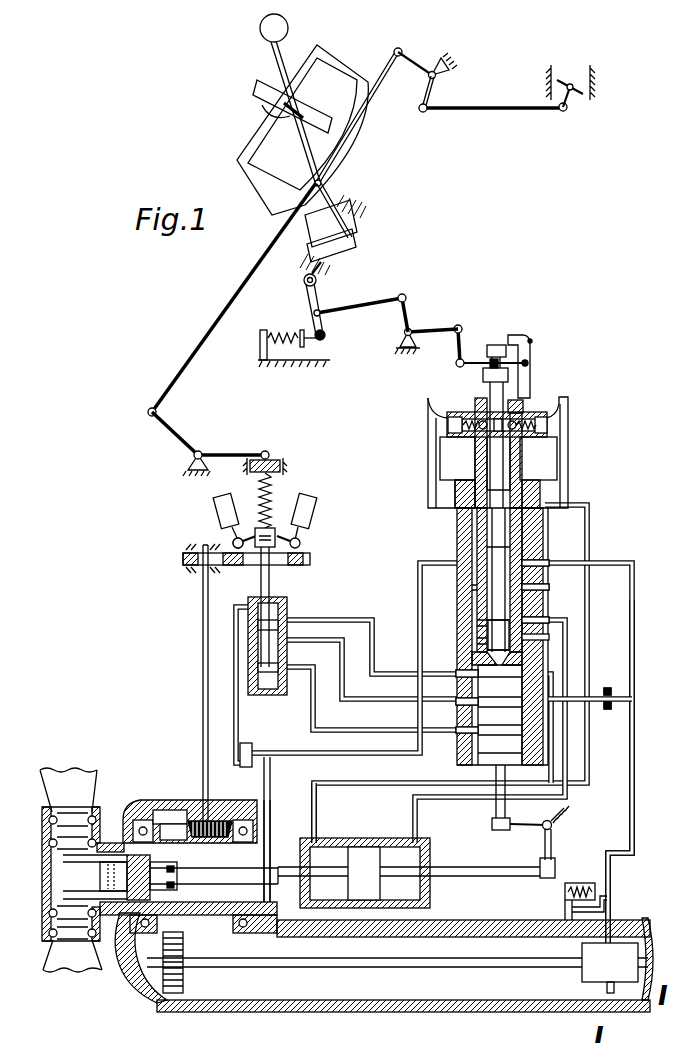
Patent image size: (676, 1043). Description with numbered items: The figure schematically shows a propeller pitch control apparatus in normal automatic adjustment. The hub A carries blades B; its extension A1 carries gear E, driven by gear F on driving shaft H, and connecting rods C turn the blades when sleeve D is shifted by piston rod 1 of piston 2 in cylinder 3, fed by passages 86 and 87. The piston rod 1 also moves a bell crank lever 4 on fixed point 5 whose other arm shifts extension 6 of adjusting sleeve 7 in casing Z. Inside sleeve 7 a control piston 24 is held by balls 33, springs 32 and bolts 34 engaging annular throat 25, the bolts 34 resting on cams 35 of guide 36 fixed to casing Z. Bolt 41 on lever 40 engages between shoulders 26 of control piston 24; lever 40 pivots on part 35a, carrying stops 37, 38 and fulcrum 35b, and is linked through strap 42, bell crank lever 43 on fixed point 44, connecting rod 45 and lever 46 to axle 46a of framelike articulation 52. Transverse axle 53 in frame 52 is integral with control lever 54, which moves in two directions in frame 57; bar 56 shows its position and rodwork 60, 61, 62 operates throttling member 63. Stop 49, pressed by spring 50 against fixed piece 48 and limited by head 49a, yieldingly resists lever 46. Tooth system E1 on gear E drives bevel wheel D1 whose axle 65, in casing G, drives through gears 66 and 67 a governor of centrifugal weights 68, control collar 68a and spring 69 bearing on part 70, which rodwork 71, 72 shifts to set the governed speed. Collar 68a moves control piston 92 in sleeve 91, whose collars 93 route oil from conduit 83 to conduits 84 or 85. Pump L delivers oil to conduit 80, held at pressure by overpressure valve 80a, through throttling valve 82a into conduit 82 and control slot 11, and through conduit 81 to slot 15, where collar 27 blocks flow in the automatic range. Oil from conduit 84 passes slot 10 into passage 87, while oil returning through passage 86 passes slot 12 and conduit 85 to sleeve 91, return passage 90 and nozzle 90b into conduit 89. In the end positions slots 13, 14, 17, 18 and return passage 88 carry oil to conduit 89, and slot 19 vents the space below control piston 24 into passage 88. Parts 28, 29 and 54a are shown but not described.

The piston rod 1 is at (244, 869).
The piston 2 is at (362, 846).
The cylinder 3 is at (378, 904).
The bell crank lever 4 is at (545, 849).
The fixed point 5 is at (552, 830).
The extension of adjusting sleeve 6 is at (494, 817).
The adjusting sleeve 7 is at (458, 530).
The slot 10 is at (463, 673).
The control slot 11 is at (463, 700).
The slot 12 is at (463, 731).
The slot 13 is at (527, 620).
The slot 14 is at (568, 506).
The slot 15 is at (527, 589).
The slot 17 is at (478, 507).
The slot 18 is at (478, 624).
The slot 19 is at (478, 652).
The control piston 24 is at (488, 393).
The annular throat 25 is at (483, 448).
The shoulders 26 is at (497, 345).
The collar 27 is at (531, 547).
The spool 28 is at (500, 634).
The chamber 29 is at (495, 487).
The springs 32 is at (549, 425).
The balls 33 is at (525, 413).
The bolts 34 is at (557, 432).
The cams 35 is at (446, 425).
The part 35a is at (533, 341).
The fulcrum 35b is at (528, 362).
The guide 36 is at (428, 453).
The stop 37 is at (530, 338).
The stop 38 is at (523, 400).
The lever 40 is at (467, 360).
The bolt 41 is at (500, 363).
The strap 42 is at (463, 325).
The bell crank lever 43 is at (437, 329).
The fixed point 44 is at (403, 334).
The connecting rod 45 is at (400, 296).
The lever 46 is at (324, 338).
The axle 46a is at (305, 273).
The fixed piece 48 is at (268, 362).
The stop 49 is at (300, 330).
The head 49a is at (259, 346).
The spring 50 is at (268, 336).
The framelike articulation 52 is at (345, 261).
The axle 53 is at (358, 233).
The control lever 54 is at (287, 50).
The pin 54a is at (262, 108).
The bar 56 is at (257, 84).
The frame 57 is at (245, 137).
The rodwork 60 is at (394, 53).
The rodwork 61 is at (421, 57).
The rodwork 62 is at (485, 106).
The throttling member 63 is at (569, 82).
The axle 65 is at (203, 731).
The gear 66 is at (184, 560).
The gear 67 is at (302, 553).
The centrifugal weights 68 is at (217, 507).
The control collar 68a is at (234, 540).
The spring 69 is at (273, 500).
The part 70 is at (284, 468).
The rodwork 71 is at (206, 453).
The rodwork 72 is at (197, 349).
The conduit 80 is at (635, 815).
The overpressure valve 80a is at (586, 884).
The conduit 81 is at (626, 563).
The conduit 82 is at (594, 697).
The throttling valve 82a is at (613, 691).
The conduit 83 is at (322, 641).
The conduit 84 is at (360, 622).
The conduit 85 is at (318, 716).
The passage 86 is at (318, 805).
The passage 87 is at (567, 720).
The return passage 88 is at (466, 589).
The conduit 89 is at (294, 754).
The return passage 90 is at (236, 672).
The nozzle 90b is at (252, 750).
The sleeve 91 is at (285, 600).
The control piston 92 is at (261, 583).
The collars 93 is at (258, 662).
The hub A is at (42, 881).
The cylindrical extension A1 is at (108, 840).
The blades B is at (64, 772).
The connecting rods C is at (86, 890).
The sleeve D is at (125, 916).
The bevel wheel D1 is at (210, 820).
The gear E is at (160, 810).
The additional tooth system E1 is at (190, 924).
The gear F is at (170, 998).
The casing G is at (133, 951).
The driving shaft H is at (239, 968).
The oil pump L is at (583, 976).
The casing Z is at (446, 489).